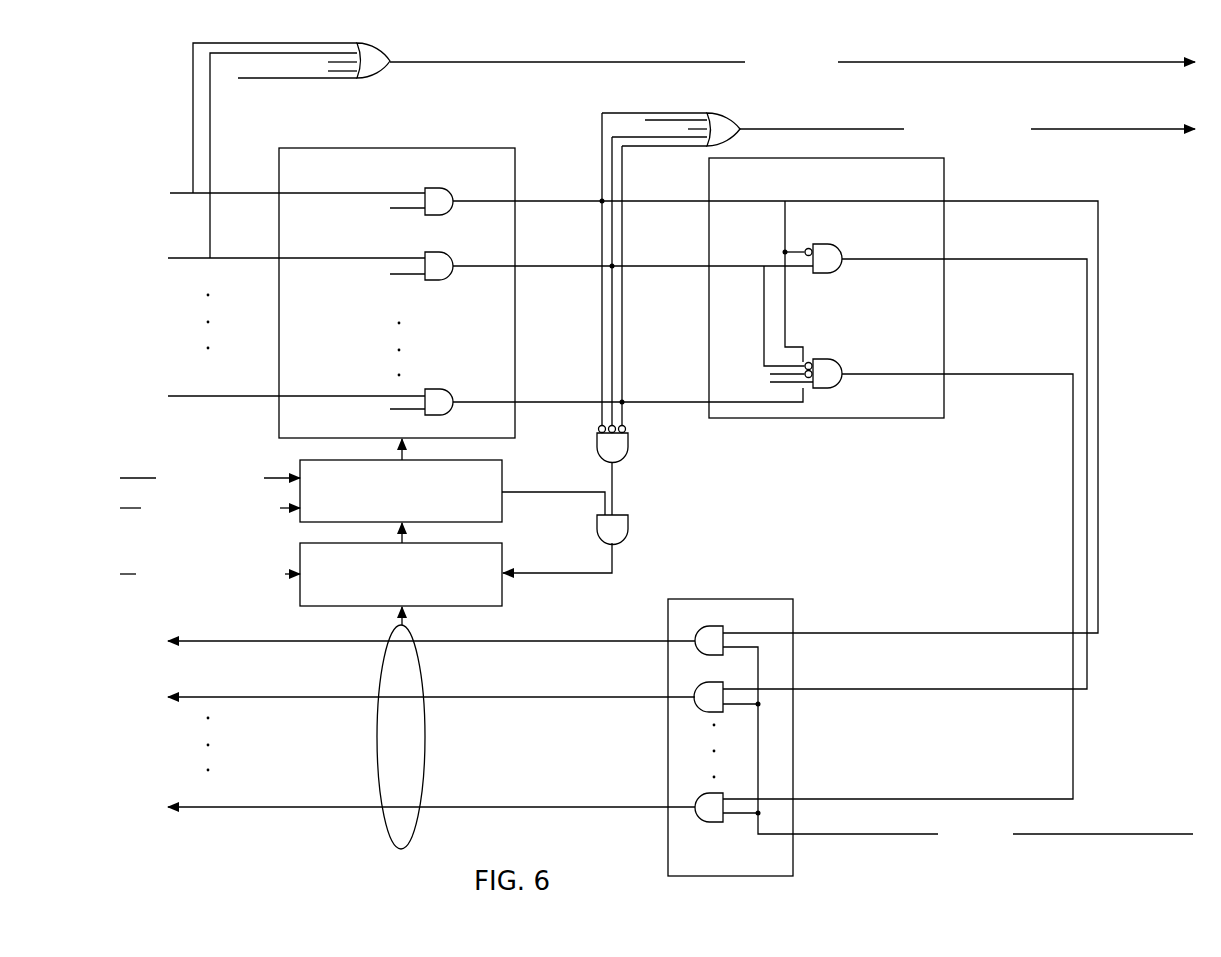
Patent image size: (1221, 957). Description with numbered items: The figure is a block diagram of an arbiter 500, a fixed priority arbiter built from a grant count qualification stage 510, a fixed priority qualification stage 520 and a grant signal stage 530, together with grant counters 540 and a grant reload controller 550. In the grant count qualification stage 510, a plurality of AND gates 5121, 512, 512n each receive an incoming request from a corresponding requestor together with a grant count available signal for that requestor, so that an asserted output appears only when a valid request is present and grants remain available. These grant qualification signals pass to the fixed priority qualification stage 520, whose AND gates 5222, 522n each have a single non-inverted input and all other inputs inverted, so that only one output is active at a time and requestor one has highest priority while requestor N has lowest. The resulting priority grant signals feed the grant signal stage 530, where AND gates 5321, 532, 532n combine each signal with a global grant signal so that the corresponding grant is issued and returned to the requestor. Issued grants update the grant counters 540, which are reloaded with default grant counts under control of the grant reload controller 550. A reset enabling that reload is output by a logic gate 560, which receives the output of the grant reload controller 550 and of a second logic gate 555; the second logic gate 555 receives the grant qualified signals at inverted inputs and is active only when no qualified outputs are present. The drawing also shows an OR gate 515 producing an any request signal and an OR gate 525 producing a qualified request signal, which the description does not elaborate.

The arbiter 500 is at (165, 40).
The grant count qualification stage 510 is at (460, 147).
The AND gate 5121 is at (455, 207).
The AND gate 512 is at (439, 266).
The AND gate 512n is at (453, 390).
The OR gate (any request) 515 is at (362, 80).
The OR gate (qualified request) 525 is at (722, 112).
The fixed priority qualification stage 520 is at (945, 182).
The AND gate 5222 is at (838, 272).
The AND gate 522n is at (842, 385).
The grant signal stage 530 is at (726, 599).
The AND gate 5321 is at (717, 626).
The AND gate 532 is at (708, 697).
The AND gate 532n is at (705, 822).
The grant counters 540 is at (413, 595).
The grant reload controller 550 is at (413, 509).
The second logic gate 555 is at (630, 447).
The logic gate 560 is at (630, 533).